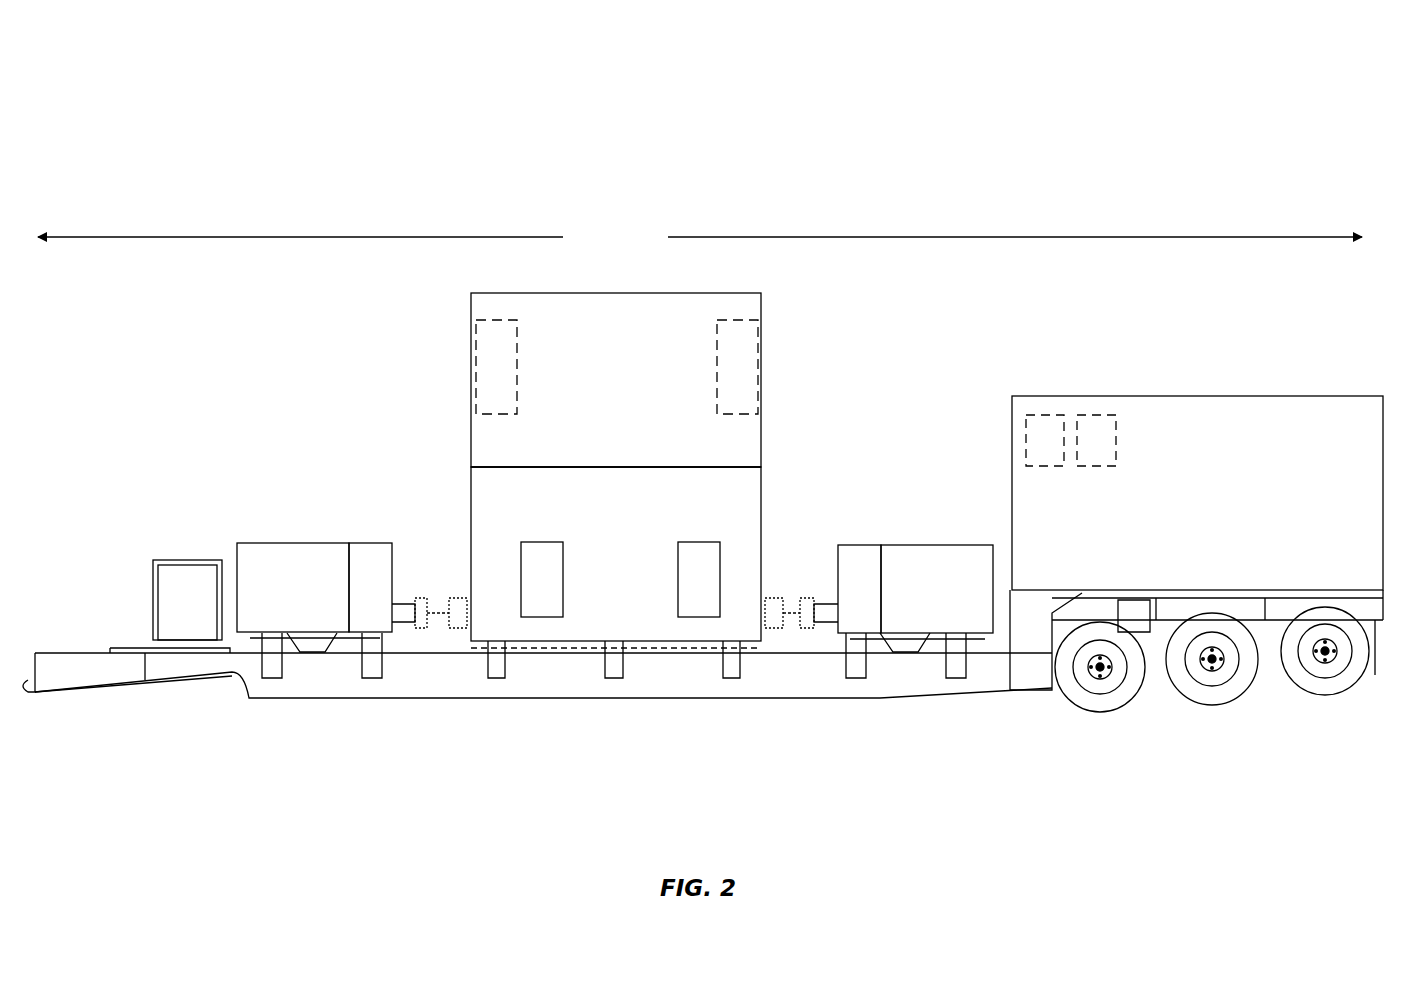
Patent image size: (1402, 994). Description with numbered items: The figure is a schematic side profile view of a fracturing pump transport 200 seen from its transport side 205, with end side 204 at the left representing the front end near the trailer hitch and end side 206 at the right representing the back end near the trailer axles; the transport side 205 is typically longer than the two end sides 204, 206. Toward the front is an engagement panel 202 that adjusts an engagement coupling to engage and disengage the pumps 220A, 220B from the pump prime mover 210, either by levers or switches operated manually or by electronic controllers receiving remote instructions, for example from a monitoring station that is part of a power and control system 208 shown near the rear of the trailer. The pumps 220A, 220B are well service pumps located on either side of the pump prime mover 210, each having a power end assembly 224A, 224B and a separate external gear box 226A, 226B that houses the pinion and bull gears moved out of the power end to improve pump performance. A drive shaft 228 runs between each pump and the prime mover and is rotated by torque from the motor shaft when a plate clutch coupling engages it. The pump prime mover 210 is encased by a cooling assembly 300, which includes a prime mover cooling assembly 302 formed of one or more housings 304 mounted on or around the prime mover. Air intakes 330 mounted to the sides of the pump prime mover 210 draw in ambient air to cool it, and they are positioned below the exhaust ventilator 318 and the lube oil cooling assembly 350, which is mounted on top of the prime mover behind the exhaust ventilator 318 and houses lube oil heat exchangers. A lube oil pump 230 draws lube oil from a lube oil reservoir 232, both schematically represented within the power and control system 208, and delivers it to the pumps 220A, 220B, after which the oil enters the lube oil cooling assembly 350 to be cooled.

The fracturing pump transport 200 is at (228, 92).
The engagement panel 202 is at (184, 558).
The end side 204 is at (43, 714).
The transport side 205 is at (700, 237).
The end side 206 is at (1365, 720).
The power and control system 208 is at (1205, 394).
The pump prime mover 210 is at (616, 572).
The pump 220A is at (325, 514).
The pump 220B is at (904, 529).
The power end assembly 224A is at (278, 541).
The power end assembly 224B is at (952, 543).
The external gear box 226A is at (365, 541).
The external gear box 226B is at (864, 543).
The drive shaft 228 is at (437, 622).
The lube oil pump 230 is at (1045, 415).
The lube oil reservoir 232 is at (1098, 415).
The cooling assembly 300 is at (762, 284).
The prime mover cooling assembly 302 is at (467, 293).
The housing 304 is at (735, 448).
The exhaust ventilator 318 is at (616, 380).
The air intake 330 is at (540, 574).
The lube oil cooling assembly 350 is at (758, 360).